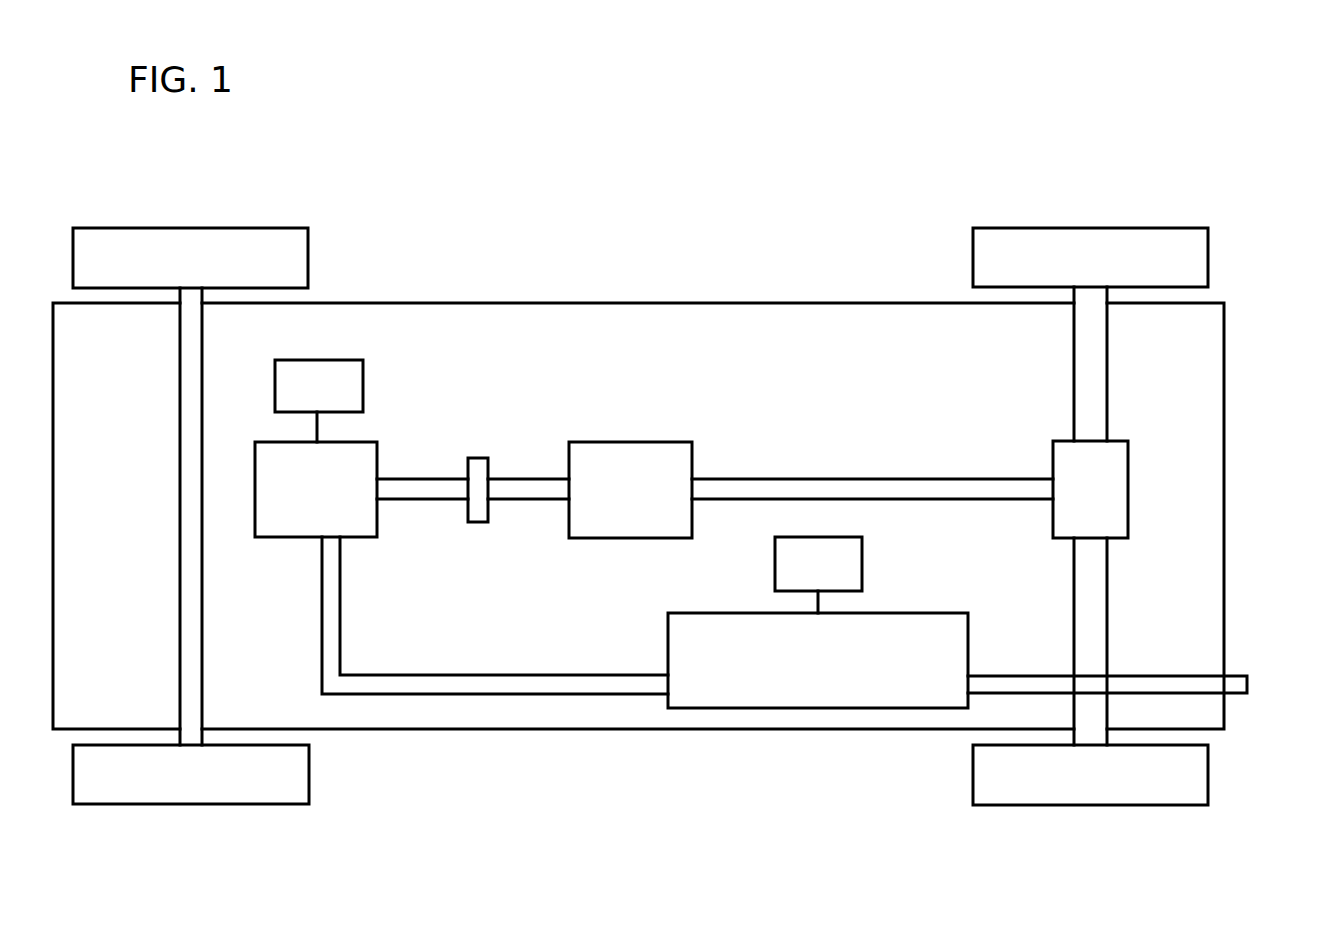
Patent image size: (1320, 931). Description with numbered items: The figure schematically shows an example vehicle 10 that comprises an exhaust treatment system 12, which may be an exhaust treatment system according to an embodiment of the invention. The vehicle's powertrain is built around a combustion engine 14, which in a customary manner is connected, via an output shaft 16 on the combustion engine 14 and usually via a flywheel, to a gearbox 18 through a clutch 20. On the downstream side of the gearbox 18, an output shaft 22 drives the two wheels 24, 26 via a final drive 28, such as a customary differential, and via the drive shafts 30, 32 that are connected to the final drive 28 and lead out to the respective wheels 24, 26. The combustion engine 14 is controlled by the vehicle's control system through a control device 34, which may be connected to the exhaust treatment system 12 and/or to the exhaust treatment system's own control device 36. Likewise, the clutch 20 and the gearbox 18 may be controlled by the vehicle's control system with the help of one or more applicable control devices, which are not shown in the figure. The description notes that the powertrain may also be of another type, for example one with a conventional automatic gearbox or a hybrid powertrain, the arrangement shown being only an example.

The vehicle 10 is at (551, 127).
The exhaust treatment system 12 is at (836, 700).
The combustion engine 14 is at (288, 525).
The output shaft 16 is at (405, 483).
The gearbox 18 is at (632, 455).
The clutch 20 is at (473, 510).
The output shaft 22 is at (963, 485).
The wheel 24 is at (1201, 251).
The wheel 26 is at (1201, 779).
The final drive 28 is at (1122, 486).
The drive shaft 30 is at (1096, 363).
The drive shaft 32 is at (1102, 651).
The control device 34 is at (316, 395).
The control device 36 is at (818, 572).